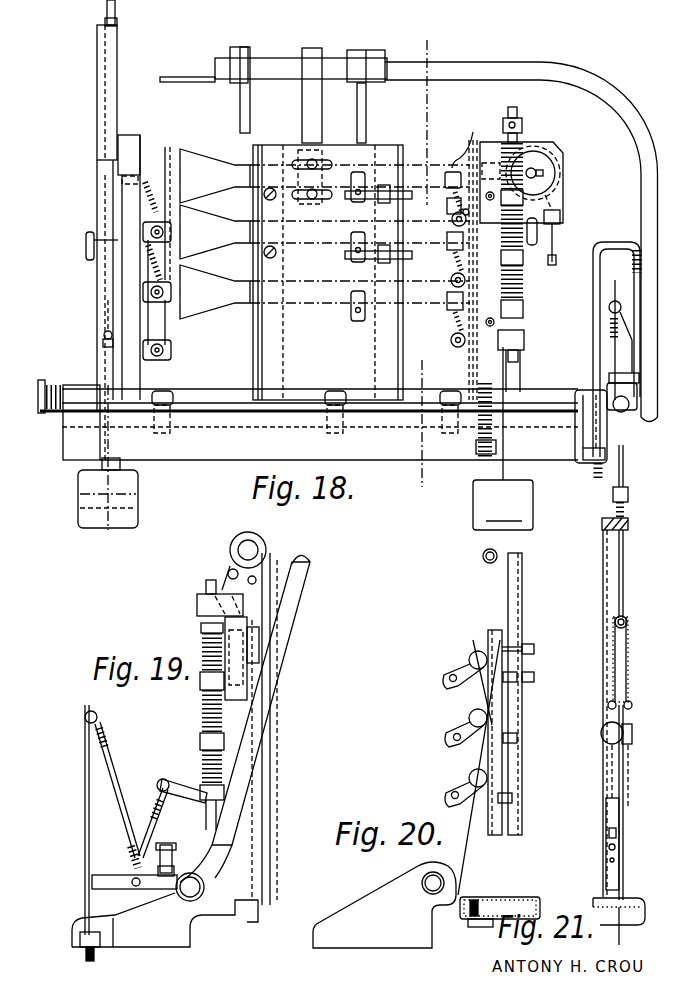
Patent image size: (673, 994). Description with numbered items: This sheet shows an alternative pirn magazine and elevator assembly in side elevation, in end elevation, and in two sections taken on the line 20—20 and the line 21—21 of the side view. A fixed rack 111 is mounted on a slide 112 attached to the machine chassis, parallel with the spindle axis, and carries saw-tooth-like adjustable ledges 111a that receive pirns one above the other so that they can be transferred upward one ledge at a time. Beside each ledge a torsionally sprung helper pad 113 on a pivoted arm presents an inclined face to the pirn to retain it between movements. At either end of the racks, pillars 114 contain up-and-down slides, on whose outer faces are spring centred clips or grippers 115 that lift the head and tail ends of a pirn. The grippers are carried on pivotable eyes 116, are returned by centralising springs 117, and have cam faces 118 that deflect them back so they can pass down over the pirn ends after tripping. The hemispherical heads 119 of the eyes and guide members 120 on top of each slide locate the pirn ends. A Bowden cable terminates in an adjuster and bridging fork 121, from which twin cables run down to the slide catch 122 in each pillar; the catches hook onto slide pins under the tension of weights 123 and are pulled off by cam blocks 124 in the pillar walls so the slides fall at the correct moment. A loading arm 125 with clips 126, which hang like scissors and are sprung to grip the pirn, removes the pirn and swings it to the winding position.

In FIG. 18, the fixed rack 111 is at (256, 276).
In FIG. 20, the fixed rack 111 is at (500, 713).
In FIG. 20, the adjustable ledges 111a is at (477, 662).
In FIG. 18, the slide 112 is at (340, 361).
In FIG. 20, the slide 112 is at (497, 845).
In FIG. 18, the helper pad 113 is at (358, 234).
In FIG. 20, the helper pad 113 is at (458, 725).
In FIG. 18, the pillars 114 is at (105, 305).
In FIG. 19, the pillars 114 is at (240, 800).
In FIG. 21, the pillars 114 is at (608, 757).
In FIG. 18, the spring centred clips or grippers 115 is at (448, 242).
In FIG. 18, the pivotable eyes 116 is at (146, 232).
In FIG. 18, the centralising springs 117 is at (147, 190).
In FIG. 18, the cam faces 118 is at (450, 178).
In FIG. 18, the heads 119 is at (170, 352).
In FIG. 18, the guide members 120 is at (336, 156).
In FIG. 18, the adjuster and bridging fork 121 is at (123, 132).
In FIG. 21, the adjuster and bridging fork 121 is at (620, 660).
In FIG. 18, the slide catch 122 is at (100, 334).
In FIG. 21, the slide catch 122 is at (606, 810).
In FIG. 18, the weights 123 is at (130, 494).
In FIG. 18, the cam blocks 124 is at (90, 252).
In FIG. 21, the cam blocks 124 is at (601, 735).
In FIG. 18, the loading arm 125 is at (597, 97).
In FIG. 19, the loading arm 125 is at (300, 603).
In FIG. 20, the loading arm 125 is at (481, 557).
In FIG. 18, the clips 126 is at (244, 113).
In FIG. 19, the clips 126 is at (230, 578).
In FIG. 18, the section line 20 is at (427, 40).
In FIG. 18, the section line 21 is at (103, 468).